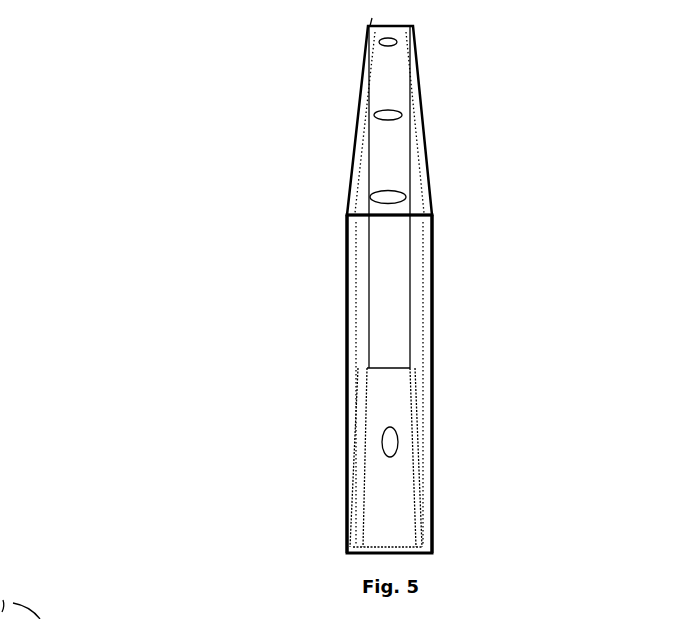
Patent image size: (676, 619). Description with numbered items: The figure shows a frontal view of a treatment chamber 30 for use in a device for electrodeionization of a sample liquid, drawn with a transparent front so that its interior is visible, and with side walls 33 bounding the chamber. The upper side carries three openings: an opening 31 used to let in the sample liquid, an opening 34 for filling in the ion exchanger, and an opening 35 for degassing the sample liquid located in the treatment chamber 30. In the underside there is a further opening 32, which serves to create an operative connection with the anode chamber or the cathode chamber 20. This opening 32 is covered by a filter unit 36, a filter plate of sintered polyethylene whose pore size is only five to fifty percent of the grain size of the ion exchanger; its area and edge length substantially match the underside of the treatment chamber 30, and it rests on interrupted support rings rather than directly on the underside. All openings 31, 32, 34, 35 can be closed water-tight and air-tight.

The cathode chamber 20 is at (454, 352).
The treatment chamber 30 is at (163, 114).
The opening 31 is at (400, 116).
The opening 32 is at (393, 440).
The side wall 33 is at (344, 302).
The opening 34 is at (398, 199).
The opening 35 is at (396, 42).
The filter unit 36 is at (396, 488).